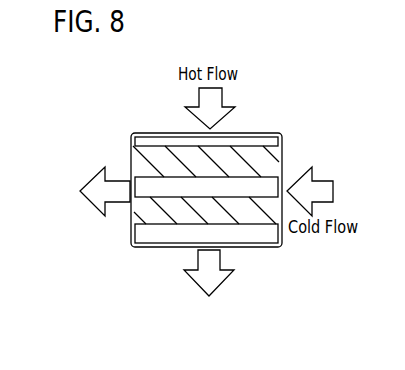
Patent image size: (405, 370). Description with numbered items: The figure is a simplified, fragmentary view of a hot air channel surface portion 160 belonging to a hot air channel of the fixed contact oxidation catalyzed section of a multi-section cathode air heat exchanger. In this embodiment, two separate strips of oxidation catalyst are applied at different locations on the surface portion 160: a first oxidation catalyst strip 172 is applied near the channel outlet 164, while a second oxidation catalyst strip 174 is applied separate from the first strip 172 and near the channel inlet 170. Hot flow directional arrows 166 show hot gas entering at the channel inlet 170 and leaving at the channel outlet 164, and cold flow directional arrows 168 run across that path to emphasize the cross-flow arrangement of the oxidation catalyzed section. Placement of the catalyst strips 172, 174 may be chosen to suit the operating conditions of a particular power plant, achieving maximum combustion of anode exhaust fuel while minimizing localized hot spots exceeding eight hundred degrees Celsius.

The hot air channel surface portion 160 is at (300, 133).
The channel outlet 164 is at (165, 253).
The hot flow directional arrows 166 is at (198, 102).
The cold flow directional arrows 168 is at (93, 168).
The channel inlet 170 is at (249, 134).
The first oxidation catalyst strip 172 is at (257, 218).
The second oxidation catalyst strip 174 is at (264, 167).